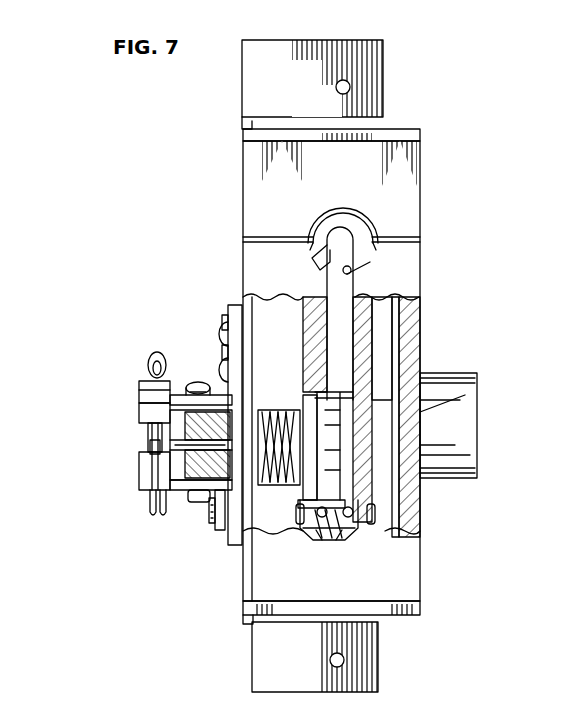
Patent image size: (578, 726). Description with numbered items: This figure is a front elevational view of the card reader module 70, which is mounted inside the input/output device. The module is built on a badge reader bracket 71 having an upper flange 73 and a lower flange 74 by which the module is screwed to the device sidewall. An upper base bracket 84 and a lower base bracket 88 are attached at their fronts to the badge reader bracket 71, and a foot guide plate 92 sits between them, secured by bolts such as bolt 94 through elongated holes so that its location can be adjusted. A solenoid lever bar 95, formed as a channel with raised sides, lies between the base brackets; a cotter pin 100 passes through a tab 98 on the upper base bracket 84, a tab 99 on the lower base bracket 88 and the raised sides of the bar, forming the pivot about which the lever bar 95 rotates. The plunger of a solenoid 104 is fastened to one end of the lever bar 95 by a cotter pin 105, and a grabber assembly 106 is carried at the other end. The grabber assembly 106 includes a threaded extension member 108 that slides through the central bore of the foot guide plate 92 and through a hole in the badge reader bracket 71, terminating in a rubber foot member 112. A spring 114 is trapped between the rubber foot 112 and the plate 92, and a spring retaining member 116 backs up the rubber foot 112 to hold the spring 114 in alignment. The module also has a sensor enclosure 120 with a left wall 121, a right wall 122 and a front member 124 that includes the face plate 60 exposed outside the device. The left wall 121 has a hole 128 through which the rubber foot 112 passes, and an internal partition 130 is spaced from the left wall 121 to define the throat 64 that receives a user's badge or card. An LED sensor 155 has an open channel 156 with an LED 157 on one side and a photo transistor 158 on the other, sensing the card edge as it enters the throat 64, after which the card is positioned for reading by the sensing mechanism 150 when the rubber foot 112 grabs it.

The card reader module 70 is at (488, 66).
The upper flange 73 is at (383, 55).
The lower flange 74 is at (378, 652).
The front member 124 is at (410, 128).
The sensor enclosure 120 is at (420, 180).
The face plate 60 is at (352, 176).
The left wall 121 is at (322, 237).
The throat 64 is at (353, 272).
The internal partition 130 is at (397, 308).
The sensing mechanism 150 is at (397, 332).
The rubber foot member 112 is at (410, 352).
The right wall 122 is at (465, 395).
The solenoid 104 is at (477, 440).
The hole 128 is at (312, 395).
The spring 114 is at (290, 408).
The spring retaining member 116 is at (300, 500).
The LED sensor 155 is at (372, 524).
The open channel 156 is at (405, 503).
The LED 157 is at (334, 556).
The photo transistor 158 is at (352, 556).
The badge reader bracket 71 is at (240, 312).
The upper base bracket 84 is at (220, 336).
The lower base bracket 88 is at (222, 535).
The foot guide plate 92 is at (185, 505).
The bolt 94 is at (200, 502).
The tab 98 is at (139, 386).
The solenoid lever bar 95 is at (139, 412).
The cotter pin 105 is at (152, 356).
The grabber assembly 106 is at (130, 433).
The tab 99 is at (150, 446).
The threaded extension member 108 is at (160, 470).
The cotter pin 100 is at (148, 508).